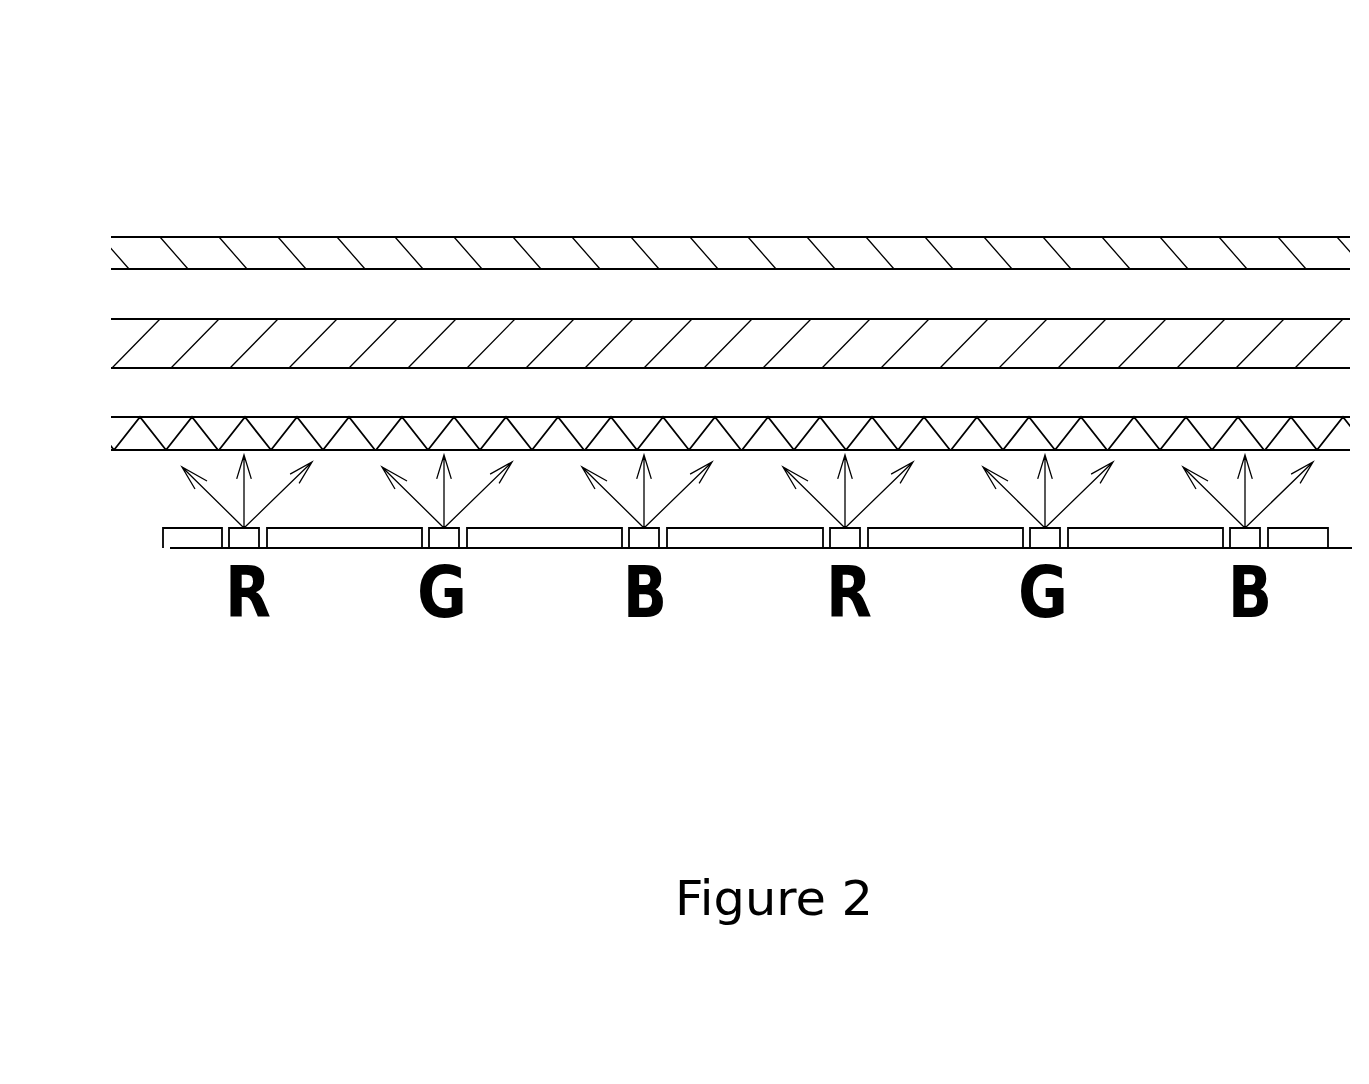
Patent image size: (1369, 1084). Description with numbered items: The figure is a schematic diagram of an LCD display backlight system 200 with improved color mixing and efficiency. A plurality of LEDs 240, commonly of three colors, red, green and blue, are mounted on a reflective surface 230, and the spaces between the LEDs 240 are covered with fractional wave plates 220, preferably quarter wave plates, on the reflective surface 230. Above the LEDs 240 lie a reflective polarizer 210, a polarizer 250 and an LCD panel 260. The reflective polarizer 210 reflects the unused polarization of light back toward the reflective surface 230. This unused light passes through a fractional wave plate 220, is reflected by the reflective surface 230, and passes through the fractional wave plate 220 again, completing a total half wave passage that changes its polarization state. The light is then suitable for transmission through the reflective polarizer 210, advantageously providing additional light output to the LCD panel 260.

The LCD display backlight system 200 is at (203, 700).
The reflective polarizer 210 is at (850, 417).
The fractional wave plate 220 is at (732, 538).
The reflective surface 230 is at (494, 548).
The LEDs 240 is at (1045, 542).
The polarizer 250 is at (275, 236).
The LCD panel 260 is at (513, 320).